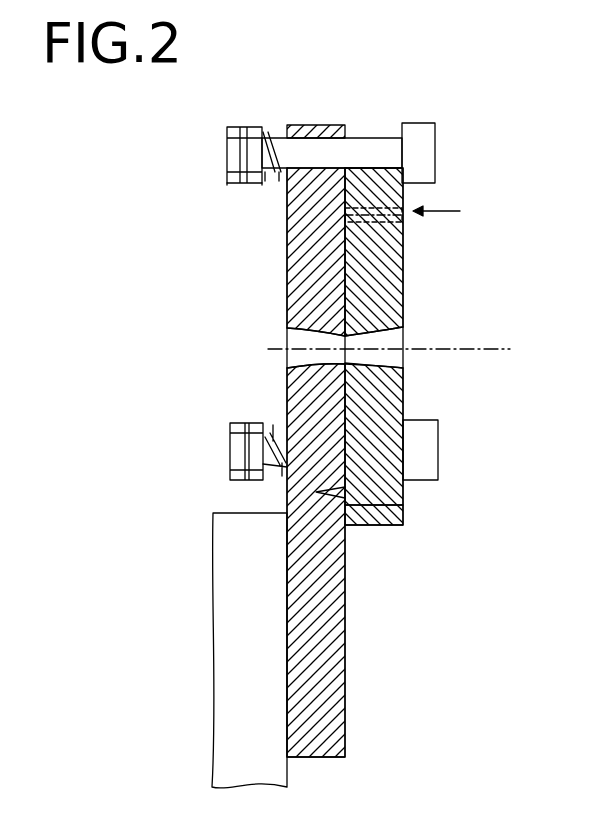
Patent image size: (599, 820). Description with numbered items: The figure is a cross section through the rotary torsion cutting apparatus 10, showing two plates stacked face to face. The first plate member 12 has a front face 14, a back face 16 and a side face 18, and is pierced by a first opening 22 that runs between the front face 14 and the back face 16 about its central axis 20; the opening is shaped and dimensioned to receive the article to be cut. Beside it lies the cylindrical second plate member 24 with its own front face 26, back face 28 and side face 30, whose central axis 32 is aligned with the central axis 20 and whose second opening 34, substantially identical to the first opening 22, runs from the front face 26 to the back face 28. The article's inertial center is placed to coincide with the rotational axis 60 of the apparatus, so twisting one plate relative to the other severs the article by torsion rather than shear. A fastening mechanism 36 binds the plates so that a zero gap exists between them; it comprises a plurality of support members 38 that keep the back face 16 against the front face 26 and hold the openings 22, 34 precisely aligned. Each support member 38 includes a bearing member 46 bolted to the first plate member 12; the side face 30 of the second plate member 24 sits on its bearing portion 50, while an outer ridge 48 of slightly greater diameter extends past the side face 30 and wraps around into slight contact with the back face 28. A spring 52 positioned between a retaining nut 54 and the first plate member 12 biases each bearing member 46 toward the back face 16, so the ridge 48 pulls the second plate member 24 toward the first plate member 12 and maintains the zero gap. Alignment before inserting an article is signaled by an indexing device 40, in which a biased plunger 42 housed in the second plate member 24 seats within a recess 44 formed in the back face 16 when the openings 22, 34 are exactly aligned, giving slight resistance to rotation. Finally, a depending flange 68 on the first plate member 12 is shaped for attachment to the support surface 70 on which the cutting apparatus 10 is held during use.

The cutting apparatus 10 is at (467, 255).
The first plate member 12 is at (287, 275).
The front face 14 is at (287, 553).
The back face 16 is at (347, 567).
The side face 18 is at (305, 125).
The central axis 20 is at (287, 360).
The first opening 22 is at (287, 333).
The second plate member 24 is at (403, 292).
The front face 26 is at (316, 492).
The back face 28 is at (403, 256).
The side face 30 is at (372, 528).
The central axis 32 is at (403, 355).
The second opening 34 is at (403, 340).
The fastening mechanism 36 is at (377, 135).
The support member 38 is at (272, 170).
The indexing device 40 is at (460, 211).
The plunger 42 is at (402, 160).
The recess 44 is at (345, 208).
The bearing member 46 is at (383, 206).
The outer ridge 48 is at (415, 122).
The bearing portion 50 is at (360, 158).
The spring 52 is at (263, 127).
The retaining nut 54 is at (230, 176).
The rotational axis 60 is at (495, 348).
The depending flange 68 is at (347, 663).
The support surface 70 is at (235, 662).